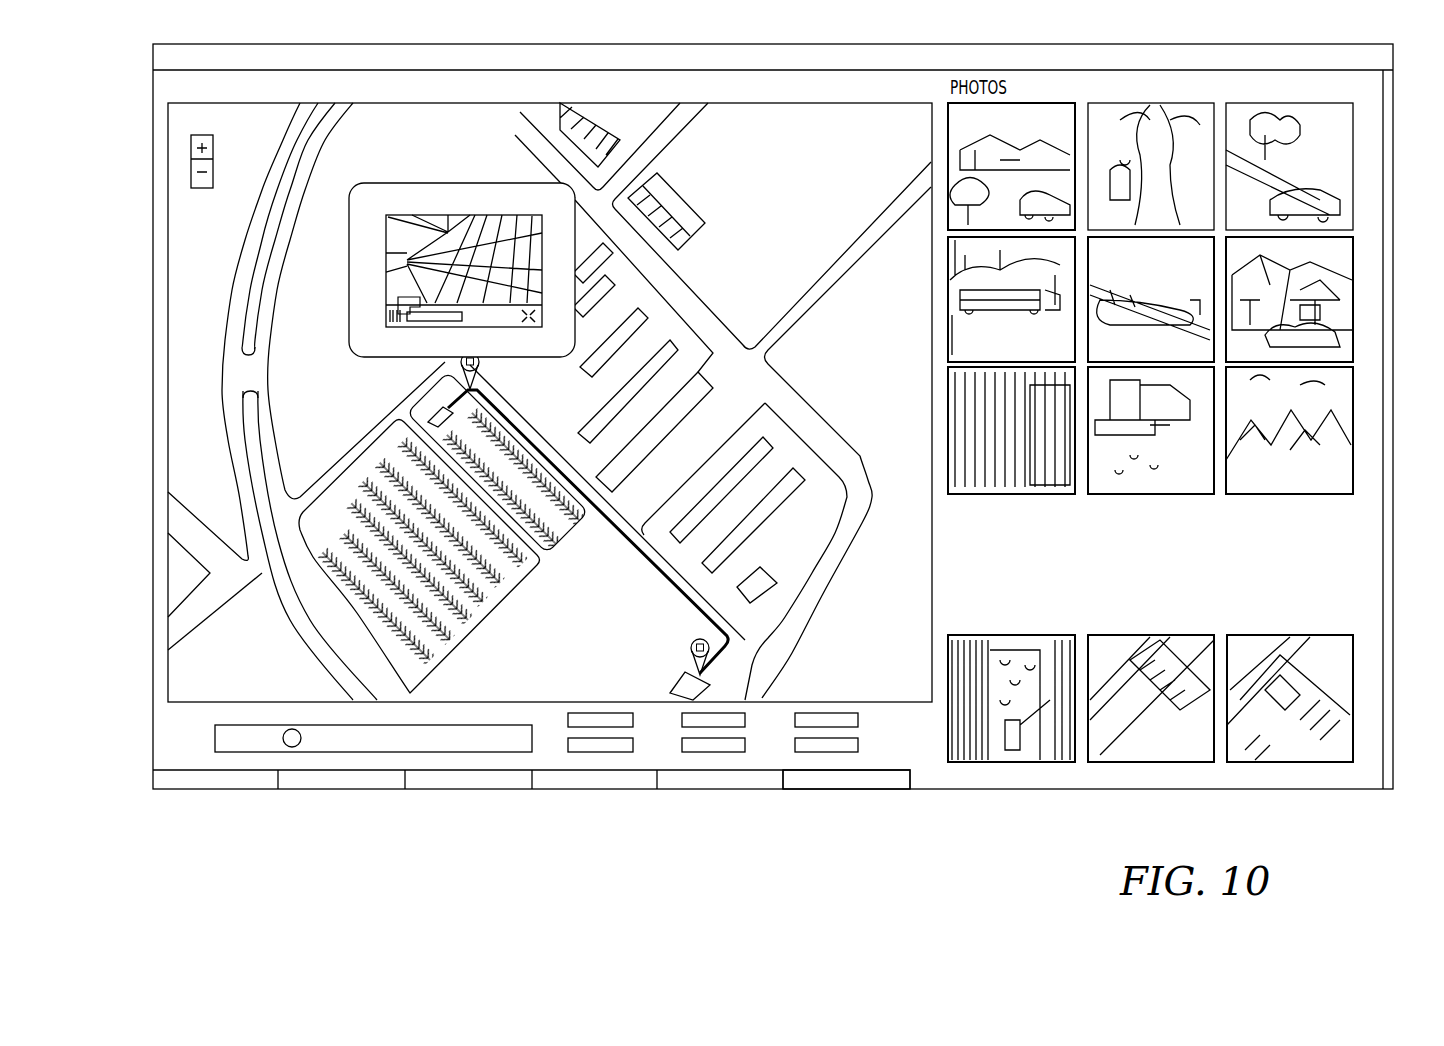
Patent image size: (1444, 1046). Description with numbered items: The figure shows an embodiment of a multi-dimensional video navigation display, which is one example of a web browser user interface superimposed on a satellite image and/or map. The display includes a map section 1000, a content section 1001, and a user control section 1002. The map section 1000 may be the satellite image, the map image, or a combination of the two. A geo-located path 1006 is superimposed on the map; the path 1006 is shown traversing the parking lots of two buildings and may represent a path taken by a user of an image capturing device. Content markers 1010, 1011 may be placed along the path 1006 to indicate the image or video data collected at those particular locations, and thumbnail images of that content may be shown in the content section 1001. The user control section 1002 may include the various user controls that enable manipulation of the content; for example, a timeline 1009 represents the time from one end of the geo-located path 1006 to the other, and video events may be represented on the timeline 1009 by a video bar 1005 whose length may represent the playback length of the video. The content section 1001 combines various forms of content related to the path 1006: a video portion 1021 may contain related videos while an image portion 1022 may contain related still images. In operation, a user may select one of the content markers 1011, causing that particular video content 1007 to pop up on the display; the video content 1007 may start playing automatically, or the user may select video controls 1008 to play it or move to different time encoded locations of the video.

The map section 1000 is at (166, 580).
The content section 1001 is at (1100, 772).
The user control section 1002 is at (539, 822).
The video bar 1005 is at (370, 742).
The geo-located path 1006 is at (537, 431).
The video content 1007 is at (427, 292).
The video controls 1008 is at (425, 322).
The timeline 1009 is at (865, 778).
The content marker 1010 is at (690, 640).
The content marker 1011 is at (473, 350).
The video portion 1021 is at (1368, 695).
The image portion 1022 is at (1337, 261).